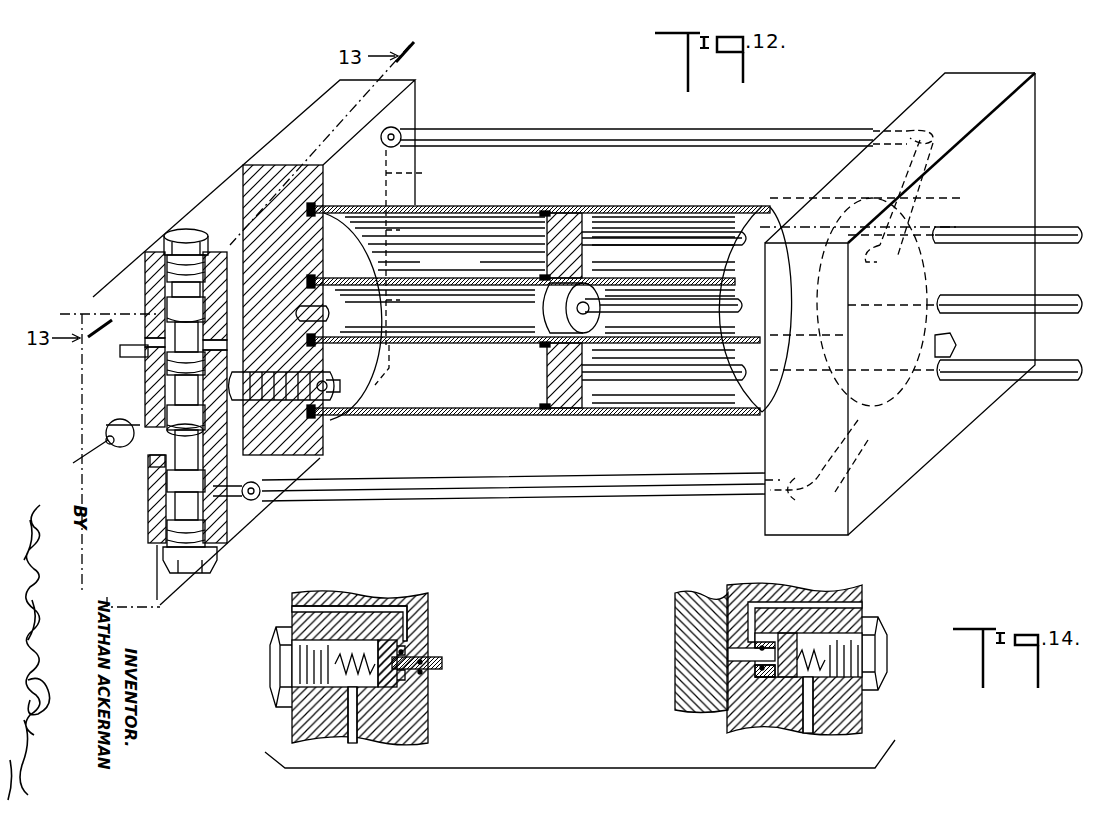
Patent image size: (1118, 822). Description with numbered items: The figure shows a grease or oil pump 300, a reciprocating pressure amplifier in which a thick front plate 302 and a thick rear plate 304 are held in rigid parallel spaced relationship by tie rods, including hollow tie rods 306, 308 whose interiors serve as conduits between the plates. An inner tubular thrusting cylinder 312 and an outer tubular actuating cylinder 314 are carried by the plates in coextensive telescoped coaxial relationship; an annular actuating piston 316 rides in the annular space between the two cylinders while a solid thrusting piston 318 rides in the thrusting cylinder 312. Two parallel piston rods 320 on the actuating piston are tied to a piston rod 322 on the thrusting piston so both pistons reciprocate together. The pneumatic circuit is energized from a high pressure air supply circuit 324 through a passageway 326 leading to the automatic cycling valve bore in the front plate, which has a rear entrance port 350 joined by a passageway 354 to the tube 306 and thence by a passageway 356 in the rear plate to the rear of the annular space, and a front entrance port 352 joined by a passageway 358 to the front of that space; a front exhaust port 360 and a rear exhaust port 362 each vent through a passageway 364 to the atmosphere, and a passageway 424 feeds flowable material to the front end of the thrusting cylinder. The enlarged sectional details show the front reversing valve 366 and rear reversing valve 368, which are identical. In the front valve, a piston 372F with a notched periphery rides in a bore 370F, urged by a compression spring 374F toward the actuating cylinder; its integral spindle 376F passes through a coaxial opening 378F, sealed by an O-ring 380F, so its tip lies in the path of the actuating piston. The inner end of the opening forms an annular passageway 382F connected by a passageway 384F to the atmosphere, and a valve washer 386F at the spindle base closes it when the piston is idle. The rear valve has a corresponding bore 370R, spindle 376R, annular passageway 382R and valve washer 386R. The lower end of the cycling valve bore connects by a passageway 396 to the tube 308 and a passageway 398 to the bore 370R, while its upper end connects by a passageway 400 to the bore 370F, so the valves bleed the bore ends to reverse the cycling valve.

In FIG. 12, the grease or oil pump 300 is at (1077, 108).
In FIG. 12, the front plate 302 is at (312, 112).
In FIG. 14, the front plate 302 is at (360, 596).
In FIG. 12, the rear plate 304 is at (1006, 86).
In FIG. 14, the rear plate 304 is at (850, 586).
In FIG. 12, the hollow tie rod 306 is at (530, 128).
In FIG. 12, the hollow tie rod 308 is at (598, 490).
In FIG. 12, the inner tubular thrusting cylinder 312 is at (472, 280).
In FIG. 12, the outer tubular actuating cylinder 314 is at (534, 181).
In FIG. 12, the annular actuating piston 316 is at (593, 208).
In FIG. 14, the annular actuating piston 316 is at (680, 652).
In FIG. 12, the solid thrusting piston 318 is at (540, 310).
In FIG. 12, the piston rods 320 is at (697, 235).
In FIG. 12, the piston rod 322 is at (1068, 296).
In FIG. 12, the high pressure air supply circuit 324 is at (105, 430).
In FIG. 12, the passageway 326 is at (167, 388).
In FIG. 12, the rear entrance port 350 is at (222, 438).
In FIG. 12, the front entrance port 352 is at (207, 277).
In FIG. 12, the passageway 354 is at (404, 170).
In FIG. 12, the passageway 356 is at (895, 192).
In FIG. 12, the passageway 358 is at (215, 300).
In FIG. 12, the front exhaust port 360 is at (168, 334).
In FIG. 12, the rear exhaust port 362 is at (160, 486).
In FIG. 12, the passageway 364 is at (150, 355).
In FIG. 14, the front reversing valve 366 is at (267, 622).
In FIG. 14, the rear reversing valve 368 is at (925, 596).
In FIG. 14, the bore 370F is at (372, 640).
In FIG. 14, the bore 370R is at (812, 636).
In FIG. 14, the piston 372F is at (380, 692).
In FIG. 14, the compression spring 374F is at (338, 668).
In FIG. 14, the spindle 376F is at (430, 660).
In FIG. 14, the spindle 376R is at (751, 659).
In FIG. 14, the coaxial opening 378F is at (428, 672).
In FIG. 14, the O-ring 380F is at (408, 652).
In FIG. 14, the annular passageway 382F is at (406, 678).
In FIG. 14, the annular passageway 382R is at (750, 715).
In FIG. 14, the passageway 384F is at (322, 596).
In FIG. 14, the valve washer 386F is at (400, 650).
In FIG. 14, the valve washer 386R is at (778, 676).
In FIG. 12, the passageway 396 is at (218, 492).
In FIG. 12, the passageway 398 is at (862, 428).
In FIG. 14, the passageway 398 is at (806, 734).
In FIG. 14, the passageway 400 is at (350, 742).
In FIG. 12, the passageway 424 is at (334, 316).